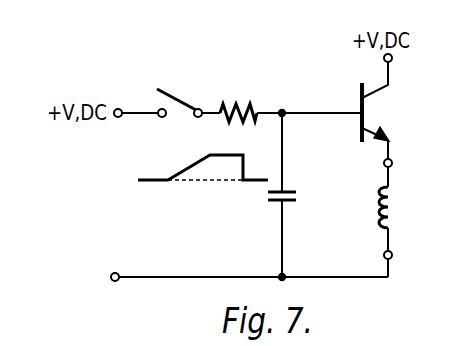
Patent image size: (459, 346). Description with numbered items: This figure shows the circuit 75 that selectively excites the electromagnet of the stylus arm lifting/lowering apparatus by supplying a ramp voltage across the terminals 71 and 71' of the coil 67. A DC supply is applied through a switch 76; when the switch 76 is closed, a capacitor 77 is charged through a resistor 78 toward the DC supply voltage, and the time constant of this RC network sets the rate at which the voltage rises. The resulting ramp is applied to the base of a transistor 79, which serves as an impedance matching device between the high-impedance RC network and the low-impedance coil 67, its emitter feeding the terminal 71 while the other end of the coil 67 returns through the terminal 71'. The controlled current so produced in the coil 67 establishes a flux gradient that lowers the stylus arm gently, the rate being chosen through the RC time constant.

The circuit 75 is at (309, 86).
The switch 76 is at (177, 96).
The resistor 78 is at (231, 100).
The capacitor 77 is at (286, 190).
The transistor 79 is at (360, 103).
The terminal 71 is at (405, 154).
The coil 67 is at (390, 209).
The terminal 71' is at (410, 254).